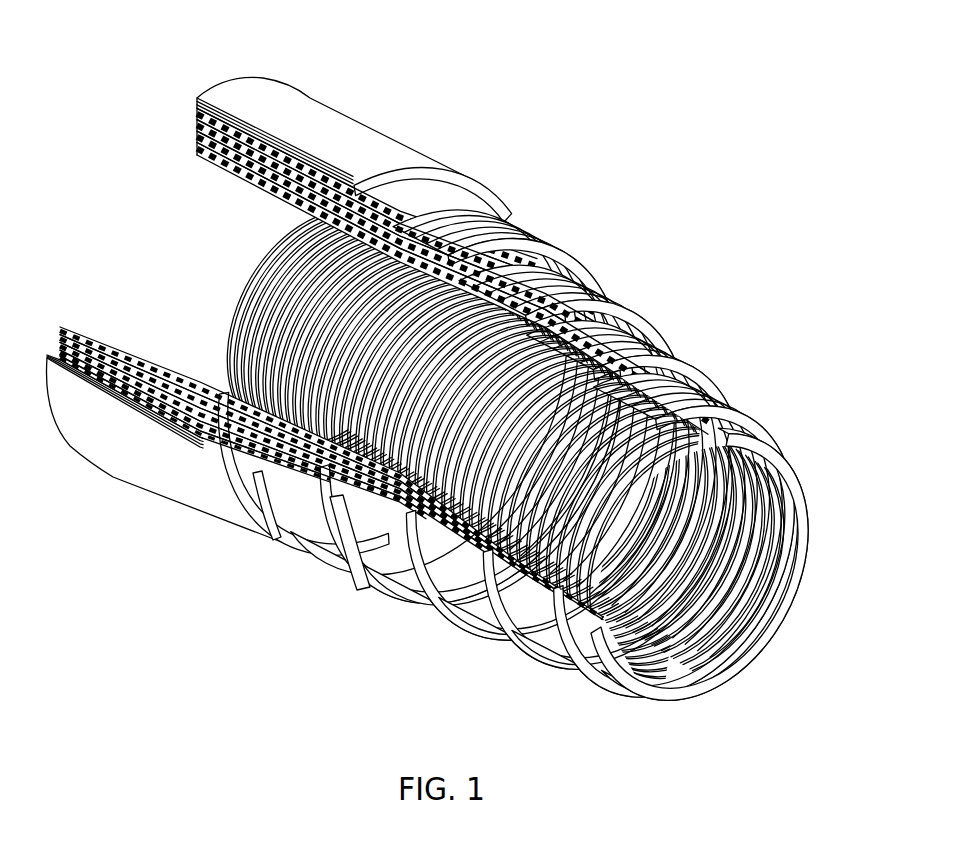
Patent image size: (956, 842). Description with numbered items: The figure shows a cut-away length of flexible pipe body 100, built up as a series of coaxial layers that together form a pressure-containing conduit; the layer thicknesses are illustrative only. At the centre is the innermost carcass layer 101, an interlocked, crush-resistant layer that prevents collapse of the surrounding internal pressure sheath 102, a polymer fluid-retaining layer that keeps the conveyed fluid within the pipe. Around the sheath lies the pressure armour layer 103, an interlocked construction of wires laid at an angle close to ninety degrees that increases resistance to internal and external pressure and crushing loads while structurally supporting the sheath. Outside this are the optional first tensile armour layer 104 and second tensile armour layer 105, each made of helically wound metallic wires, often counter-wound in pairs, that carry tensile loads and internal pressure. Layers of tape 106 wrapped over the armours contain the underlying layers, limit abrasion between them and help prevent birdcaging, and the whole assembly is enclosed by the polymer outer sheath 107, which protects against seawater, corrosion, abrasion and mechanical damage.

The pipe body 100 is at (648, 202).
The carcass layer 101 is at (780, 440).
The internal pressure sheath 102 is at (717, 387).
The pressure armour layer 103 is at (657, 330).
The first tensile armour layer 104 is at (600, 283).
The second tensile armour layer 105 is at (540, 245).
The layers of tape 106 is at (263, 547).
The outer sheath 107 is at (397, 142).